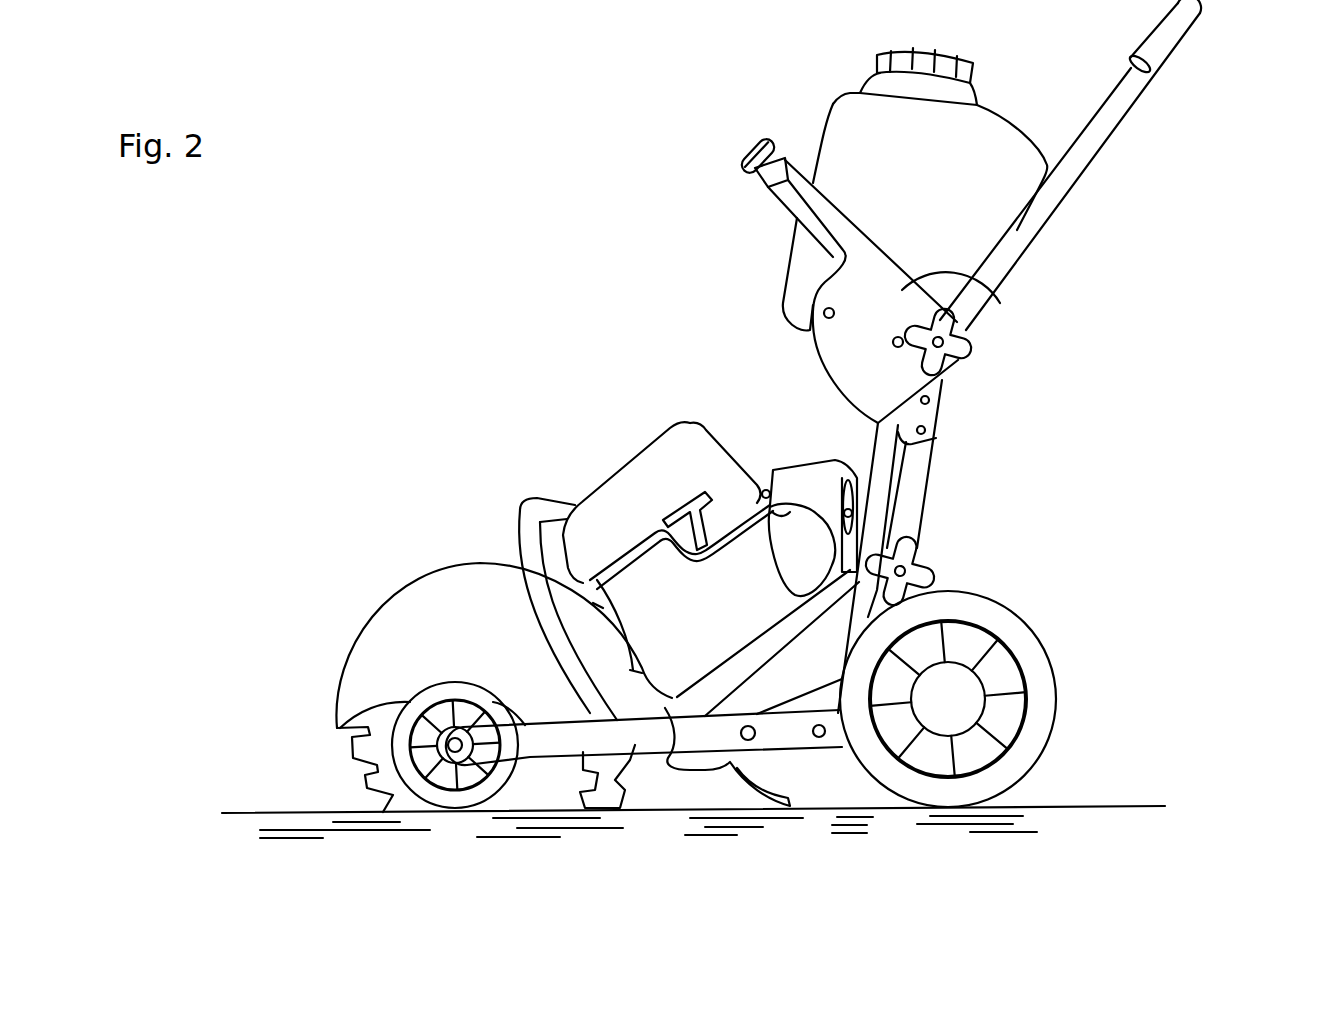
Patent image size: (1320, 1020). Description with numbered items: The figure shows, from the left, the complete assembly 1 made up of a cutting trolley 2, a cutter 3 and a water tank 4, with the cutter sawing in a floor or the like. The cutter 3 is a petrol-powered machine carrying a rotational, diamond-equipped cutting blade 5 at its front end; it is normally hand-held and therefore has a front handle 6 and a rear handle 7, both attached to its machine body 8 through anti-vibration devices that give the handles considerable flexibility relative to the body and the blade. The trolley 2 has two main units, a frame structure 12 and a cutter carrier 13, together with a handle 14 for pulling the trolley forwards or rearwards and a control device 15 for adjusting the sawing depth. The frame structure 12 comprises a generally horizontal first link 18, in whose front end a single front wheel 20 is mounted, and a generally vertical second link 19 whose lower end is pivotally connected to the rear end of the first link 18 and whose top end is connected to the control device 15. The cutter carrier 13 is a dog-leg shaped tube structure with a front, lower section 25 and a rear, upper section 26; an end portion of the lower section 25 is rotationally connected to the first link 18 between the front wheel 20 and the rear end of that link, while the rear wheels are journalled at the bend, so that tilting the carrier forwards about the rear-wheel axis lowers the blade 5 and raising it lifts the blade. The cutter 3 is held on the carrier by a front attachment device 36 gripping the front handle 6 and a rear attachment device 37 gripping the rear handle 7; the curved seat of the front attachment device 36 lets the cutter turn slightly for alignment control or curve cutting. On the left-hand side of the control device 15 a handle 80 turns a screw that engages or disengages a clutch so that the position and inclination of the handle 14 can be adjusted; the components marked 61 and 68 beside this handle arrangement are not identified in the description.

The complete assembly 1 is at (507, 236).
The cutting trolley 2 is at (1082, 490).
The cutter 3 is at (606, 394).
The water tank 4 is at (840, 123).
The cutting blade 5 is at (363, 776).
The front handle 6 is at (525, 508).
The rear handle 7 is at (775, 485).
The machine body 8 is at (700, 455).
The frame structure 12 is at (838, 752).
The cutter carrier 13 is at (923, 518).
The handle 14 is at (1200, 8).
The control device 15 is at (955, 285).
The first link 18 is at (817, 738).
The second link 19 is at (880, 466).
The front wheel 20 is at (460, 778).
The front lower section 25 is at (812, 700).
The rear upper section 26 is at (907, 503).
The front attachment device 36 is at (668, 757).
The rear attachment device 37 is at (845, 470).
The push tube 61 is at (780, 205).
The grip cap 68 is at (742, 160).
The handle 80 is at (962, 330).